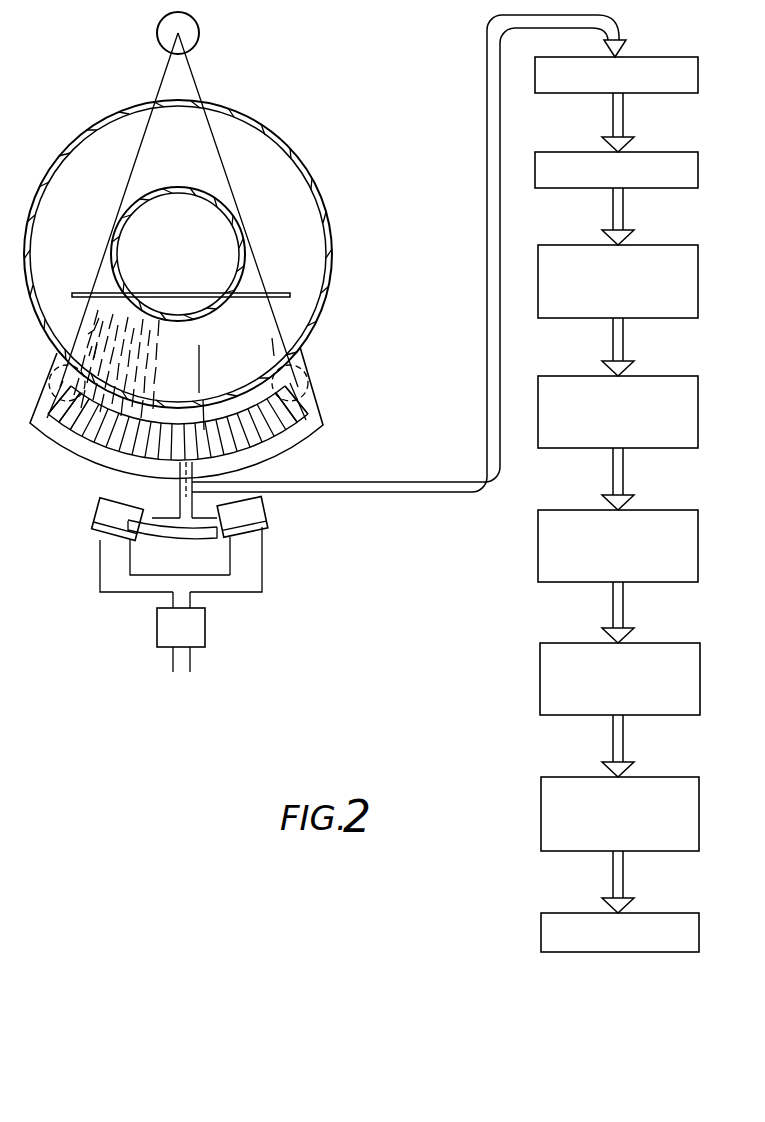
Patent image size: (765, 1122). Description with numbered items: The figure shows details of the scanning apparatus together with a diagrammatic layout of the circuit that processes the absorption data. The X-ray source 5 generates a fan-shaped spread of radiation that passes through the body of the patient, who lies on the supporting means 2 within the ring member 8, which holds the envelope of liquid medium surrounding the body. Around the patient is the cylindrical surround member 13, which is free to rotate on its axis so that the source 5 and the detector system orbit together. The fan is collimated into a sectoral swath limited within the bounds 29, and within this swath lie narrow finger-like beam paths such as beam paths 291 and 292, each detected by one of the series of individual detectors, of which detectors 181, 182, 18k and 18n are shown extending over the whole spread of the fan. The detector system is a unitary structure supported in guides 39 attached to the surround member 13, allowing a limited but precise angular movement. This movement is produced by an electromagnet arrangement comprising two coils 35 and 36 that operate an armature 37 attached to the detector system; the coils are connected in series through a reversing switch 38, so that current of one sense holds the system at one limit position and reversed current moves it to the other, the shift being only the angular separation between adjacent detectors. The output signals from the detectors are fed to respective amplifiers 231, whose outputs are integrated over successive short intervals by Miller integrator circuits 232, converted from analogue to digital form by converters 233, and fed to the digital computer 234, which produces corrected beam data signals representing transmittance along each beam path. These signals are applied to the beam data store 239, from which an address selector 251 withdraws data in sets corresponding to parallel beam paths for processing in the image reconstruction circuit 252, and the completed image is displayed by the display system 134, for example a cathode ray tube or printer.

The X-ray source 5 is at (200, 33).
The surround member 13 is at (318, 198).
The ring member 8 is at (178, 186).
The supporting means 2 is at (83, 292).
The sectoral swath bounds 29 is at (84, 306).
The beam path 291 is at (88, 336).
The beam path 292 is at (94, 348).
The guides 39 is at (310, 405).
The individual detector 18k is at (208, 452).
The individual detector 18n is at (305, 420).
The individual detector 181 is at (58, 440).
The individual detector 182 is at (80, 437).
The armature 37 is at (177, 503).
The coil 35 is at (93, 523).
The coil 36 is at (262, 513).
The reversing switch 38 is at (157, 631).
The amplifiers 231 is at (643, 56).
The Miller integrator circuits 232 is at (643, 151).
The analogue-to-digital converters 233 is at (645, 244).
The digital computer 234 is at (643, 375).
The beam data store 239 is at (643, 509).
The address selector 251 is at (645, 642).
The image reconstruction circuit 252 is at (645, 776).
The display system 134 is at (645, 912).